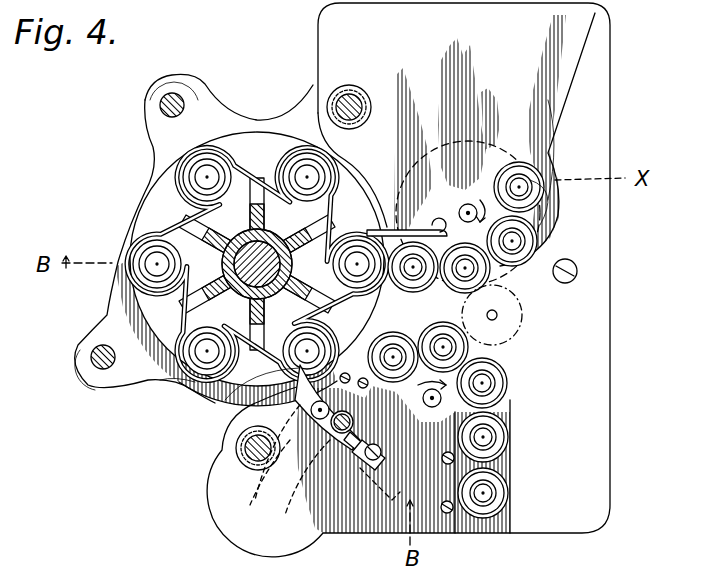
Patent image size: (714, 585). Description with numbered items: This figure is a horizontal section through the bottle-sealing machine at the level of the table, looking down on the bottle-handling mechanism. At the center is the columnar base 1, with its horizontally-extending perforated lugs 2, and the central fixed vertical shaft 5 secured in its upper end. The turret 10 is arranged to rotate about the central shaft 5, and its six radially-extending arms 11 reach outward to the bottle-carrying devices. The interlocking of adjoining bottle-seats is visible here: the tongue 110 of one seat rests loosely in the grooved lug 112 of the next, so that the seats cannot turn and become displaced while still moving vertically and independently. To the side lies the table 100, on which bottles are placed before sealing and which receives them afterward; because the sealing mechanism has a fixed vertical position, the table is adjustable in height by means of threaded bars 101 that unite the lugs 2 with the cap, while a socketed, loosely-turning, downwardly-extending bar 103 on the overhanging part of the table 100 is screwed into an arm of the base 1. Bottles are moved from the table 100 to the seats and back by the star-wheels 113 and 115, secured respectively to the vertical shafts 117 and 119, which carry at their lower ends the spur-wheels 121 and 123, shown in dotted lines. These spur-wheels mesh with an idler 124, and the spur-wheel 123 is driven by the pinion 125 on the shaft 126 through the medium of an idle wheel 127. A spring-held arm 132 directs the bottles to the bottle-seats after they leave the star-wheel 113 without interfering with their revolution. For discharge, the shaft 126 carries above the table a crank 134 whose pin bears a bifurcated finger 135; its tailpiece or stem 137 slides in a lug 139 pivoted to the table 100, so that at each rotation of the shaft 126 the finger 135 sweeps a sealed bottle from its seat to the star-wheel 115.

The columnar base 1 is at (125, 205).
The perforated lugs 2 is at (300, 72).
The central fixed vertical shaft 5 is at (162, 393).
The turret 10 is at (294, 270).
The radially-extending arms 11 is at (212, 226).
The table 100 is at (363, 280).
The bars 101 is at (158, 107).
The downwardly-extending bar 103 is at (580, 272).
The tongue 110 is at (255, 232).
The grooved lug 112 is at (122, 318).
The star-wheel 113 is at (548, 143).
The star-wheel 115 is at (510, 385).
The vertical shaft 117 is at (545, 212).
The vertical shaft 119 is at (512, 442).
The spur-wheel 121 is at (486, 108).
The spur-wheel 123 is at (510, 414).
The idler 124 is at (523, 328).
The pinion 125 is at (318, 438).
The shaft 126 is at (252, 460).
The idle wheel 127 is at (352, 470).
The spring-held arm 132 is at (388, 222).
The crank 134 is at (300, 440).
The bifurcated finger 135 is at (225, 423).
The tailpiece or stem 137 is at (378, 480).
The lug 139 is at (440, 525).